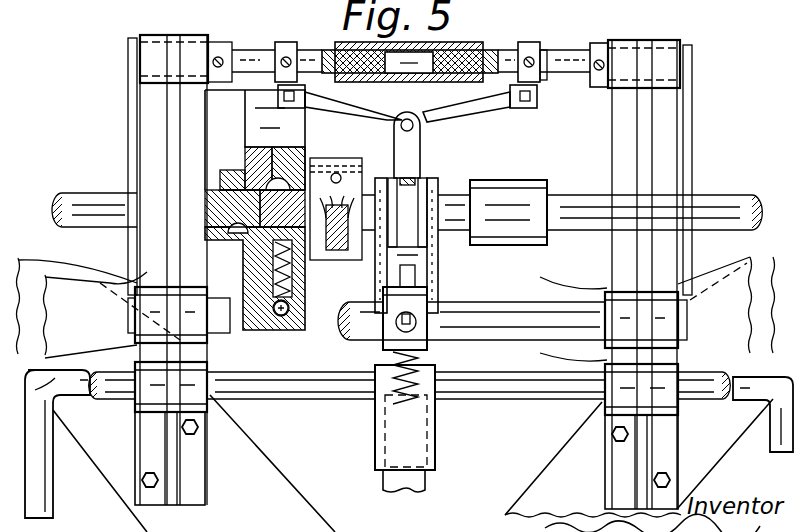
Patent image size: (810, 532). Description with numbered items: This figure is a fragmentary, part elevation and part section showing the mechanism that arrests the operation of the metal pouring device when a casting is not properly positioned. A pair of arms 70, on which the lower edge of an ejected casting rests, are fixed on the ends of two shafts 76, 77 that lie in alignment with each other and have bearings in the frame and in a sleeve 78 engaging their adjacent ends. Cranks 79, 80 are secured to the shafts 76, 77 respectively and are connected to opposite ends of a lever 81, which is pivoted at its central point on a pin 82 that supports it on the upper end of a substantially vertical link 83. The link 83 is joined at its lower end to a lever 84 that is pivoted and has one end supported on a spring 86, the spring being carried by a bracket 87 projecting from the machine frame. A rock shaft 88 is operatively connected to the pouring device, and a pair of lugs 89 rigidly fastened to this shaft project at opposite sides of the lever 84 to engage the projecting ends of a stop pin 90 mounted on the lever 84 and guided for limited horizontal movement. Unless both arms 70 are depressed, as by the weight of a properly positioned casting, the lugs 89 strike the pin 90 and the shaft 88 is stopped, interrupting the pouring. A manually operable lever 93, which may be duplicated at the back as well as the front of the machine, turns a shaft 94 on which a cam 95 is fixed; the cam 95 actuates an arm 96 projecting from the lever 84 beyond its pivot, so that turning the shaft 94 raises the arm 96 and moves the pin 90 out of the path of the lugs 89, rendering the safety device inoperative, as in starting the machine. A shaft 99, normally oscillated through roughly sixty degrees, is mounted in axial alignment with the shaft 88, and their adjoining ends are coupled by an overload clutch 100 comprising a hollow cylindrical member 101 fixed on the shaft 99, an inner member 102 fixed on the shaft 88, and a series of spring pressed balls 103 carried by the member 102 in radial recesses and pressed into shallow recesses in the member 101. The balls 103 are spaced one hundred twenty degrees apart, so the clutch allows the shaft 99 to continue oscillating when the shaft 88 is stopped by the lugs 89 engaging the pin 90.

The arms 70 is at (132, 122).
The shaft 76 is at (252, 50).
The shaft 77 is at (550, 56).
The sleeve 78 is at (457, 42).
The crank 79 is at (278, 90).
The crank 80 is at (537, 92).
The lever 81 is at (465, 112).
The pin 82 is at (413, 97).
The link 83 is at (412, 152).
The lever 84 is at (412, 305).
The spring 86 is at (418, 356).
The bracket 87 is at (425, 474).
The rock shaft 88 is at (562, 202).
The lugs 89 is at (378, 272).
The stop pin 90 is at (343, 320).
The lever 93 is at (43, 495).
The shaft 94 is at (320, 392).
The cam 95 is at (437, 424).
The arm 96 is at (416, 322).
The shaft 99 is at (94, 193).
The overload clutch 100 is at (309, 133).
The hollow cylindrical member 101 is at (262, 330).
The inner member 102 is at (302, 288).
The spring pressed balls 103 is at (283, 316).